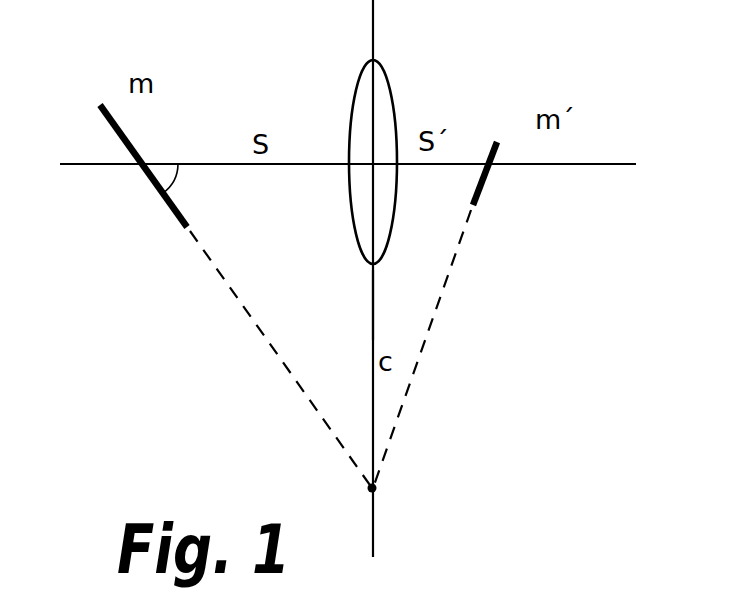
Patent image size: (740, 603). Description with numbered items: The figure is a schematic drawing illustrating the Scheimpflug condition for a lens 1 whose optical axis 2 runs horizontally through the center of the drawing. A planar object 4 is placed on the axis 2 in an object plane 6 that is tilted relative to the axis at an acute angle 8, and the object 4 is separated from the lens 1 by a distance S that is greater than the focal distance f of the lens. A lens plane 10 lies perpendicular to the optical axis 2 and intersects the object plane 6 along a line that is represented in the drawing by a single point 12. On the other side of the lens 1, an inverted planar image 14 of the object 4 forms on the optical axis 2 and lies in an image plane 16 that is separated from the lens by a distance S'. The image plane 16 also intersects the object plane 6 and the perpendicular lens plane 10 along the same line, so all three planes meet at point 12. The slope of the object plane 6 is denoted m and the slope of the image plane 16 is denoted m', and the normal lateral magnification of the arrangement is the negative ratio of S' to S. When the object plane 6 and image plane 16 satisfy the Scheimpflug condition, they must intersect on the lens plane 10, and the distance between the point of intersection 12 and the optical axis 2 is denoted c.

The lens 1 is at (358, 86).
The optical axis 2 is at (600, 163).
The planar object 4 is at (108, 102).
The object plane 6 is at (276, 355).
The acute angle 8 is at (180, 183).
The lens plane 10 is at (372, 304).
The point of intersection 12 is at (378, 492).
The inverted planar image 14 is at (491, 140).
The image plane 16 is at (435, 316).